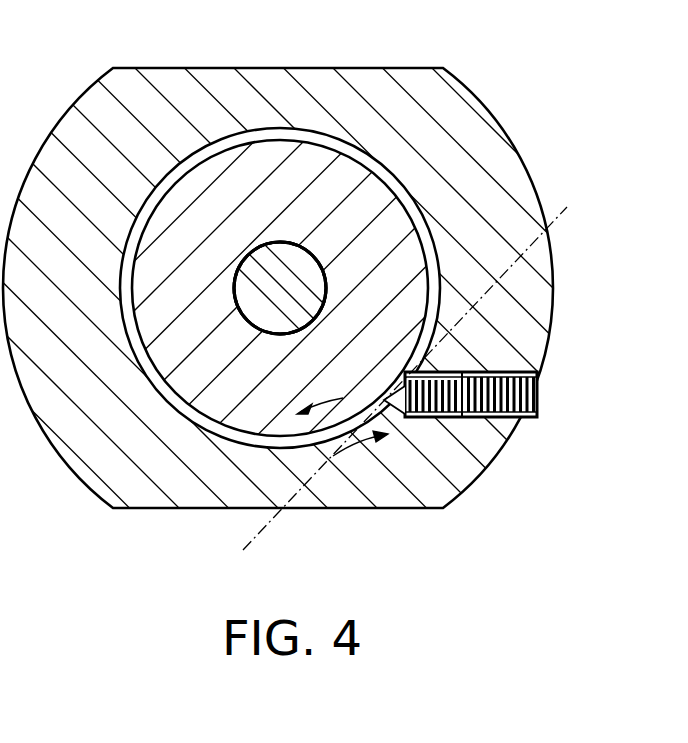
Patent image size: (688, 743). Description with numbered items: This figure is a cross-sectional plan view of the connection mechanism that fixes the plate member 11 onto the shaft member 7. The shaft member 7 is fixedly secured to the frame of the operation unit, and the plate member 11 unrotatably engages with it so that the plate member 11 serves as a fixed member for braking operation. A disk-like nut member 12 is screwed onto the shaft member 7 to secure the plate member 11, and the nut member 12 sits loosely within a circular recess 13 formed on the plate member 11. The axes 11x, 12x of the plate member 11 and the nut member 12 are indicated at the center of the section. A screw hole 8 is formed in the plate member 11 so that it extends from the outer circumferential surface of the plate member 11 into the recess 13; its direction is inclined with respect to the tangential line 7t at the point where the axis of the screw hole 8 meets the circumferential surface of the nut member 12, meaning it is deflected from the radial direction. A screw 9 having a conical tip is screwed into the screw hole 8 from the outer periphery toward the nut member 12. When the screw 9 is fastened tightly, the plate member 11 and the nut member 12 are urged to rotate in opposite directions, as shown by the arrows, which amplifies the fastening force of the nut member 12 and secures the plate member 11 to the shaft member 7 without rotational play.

The shaft member 7 is at (286, 293).
The tangential line 7t is at (267, 523).
The screw hole 8 is at (514, 424).
The screw 9 is at (425, 417).
The plate member 11 is at (457, 130).
The axis of housing 11x is at (263, 179).
The nut member 12 is at (390, 278).
The axis of rotor 12x is at (249, 256).
The circular recess 13 is at (393, 173).